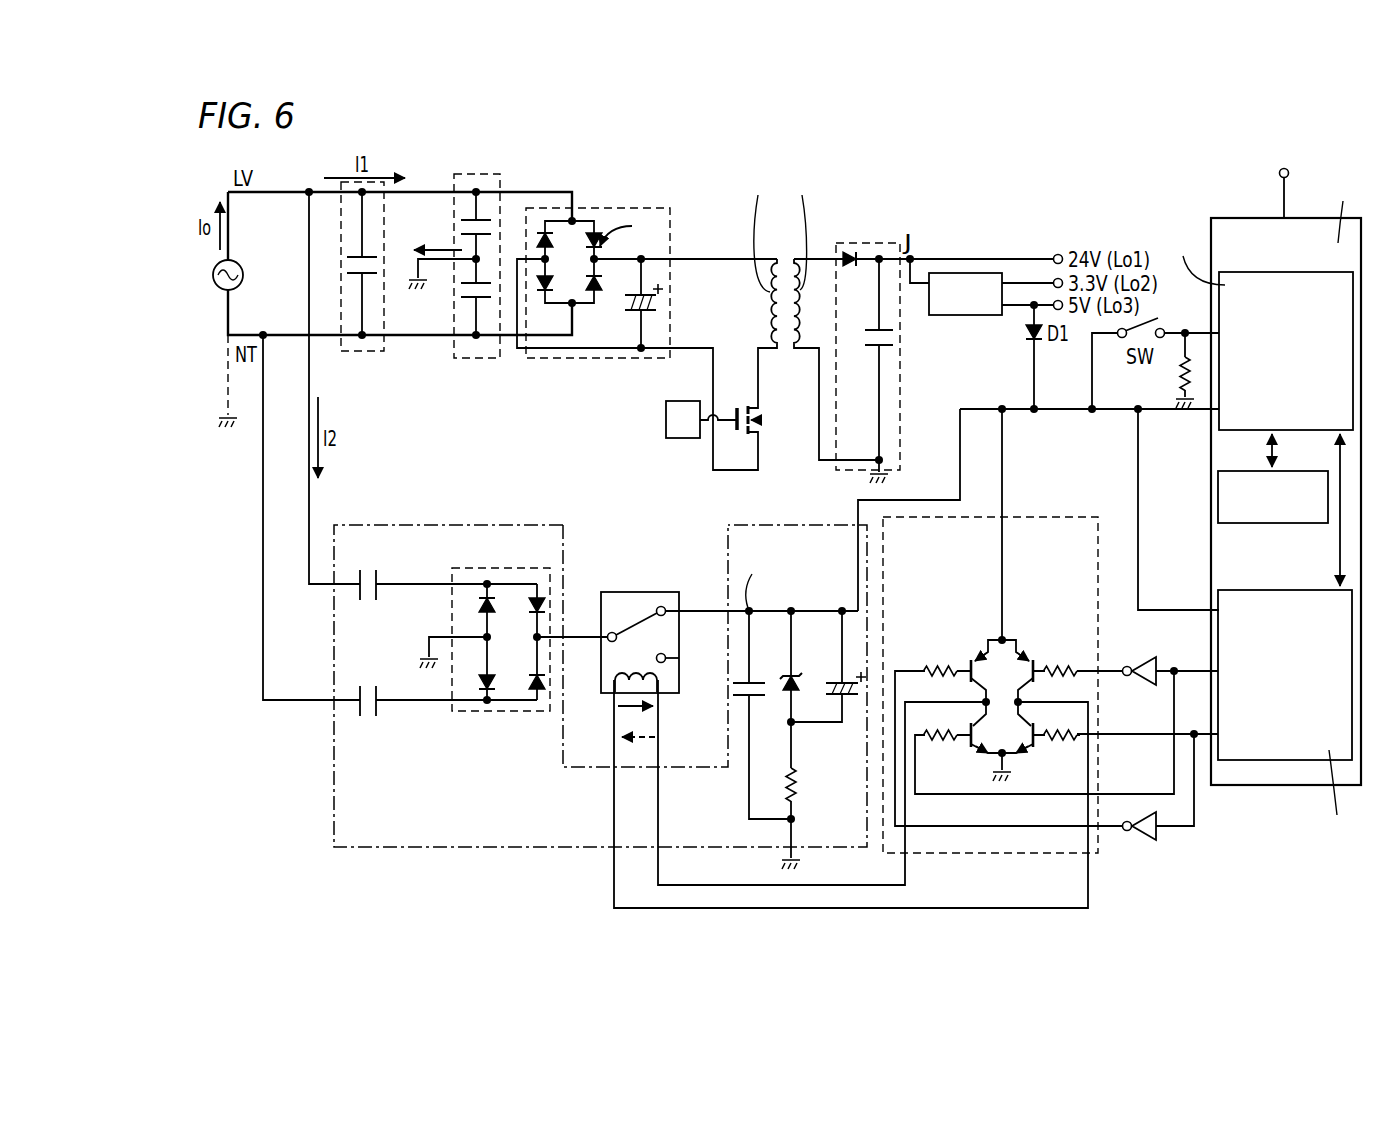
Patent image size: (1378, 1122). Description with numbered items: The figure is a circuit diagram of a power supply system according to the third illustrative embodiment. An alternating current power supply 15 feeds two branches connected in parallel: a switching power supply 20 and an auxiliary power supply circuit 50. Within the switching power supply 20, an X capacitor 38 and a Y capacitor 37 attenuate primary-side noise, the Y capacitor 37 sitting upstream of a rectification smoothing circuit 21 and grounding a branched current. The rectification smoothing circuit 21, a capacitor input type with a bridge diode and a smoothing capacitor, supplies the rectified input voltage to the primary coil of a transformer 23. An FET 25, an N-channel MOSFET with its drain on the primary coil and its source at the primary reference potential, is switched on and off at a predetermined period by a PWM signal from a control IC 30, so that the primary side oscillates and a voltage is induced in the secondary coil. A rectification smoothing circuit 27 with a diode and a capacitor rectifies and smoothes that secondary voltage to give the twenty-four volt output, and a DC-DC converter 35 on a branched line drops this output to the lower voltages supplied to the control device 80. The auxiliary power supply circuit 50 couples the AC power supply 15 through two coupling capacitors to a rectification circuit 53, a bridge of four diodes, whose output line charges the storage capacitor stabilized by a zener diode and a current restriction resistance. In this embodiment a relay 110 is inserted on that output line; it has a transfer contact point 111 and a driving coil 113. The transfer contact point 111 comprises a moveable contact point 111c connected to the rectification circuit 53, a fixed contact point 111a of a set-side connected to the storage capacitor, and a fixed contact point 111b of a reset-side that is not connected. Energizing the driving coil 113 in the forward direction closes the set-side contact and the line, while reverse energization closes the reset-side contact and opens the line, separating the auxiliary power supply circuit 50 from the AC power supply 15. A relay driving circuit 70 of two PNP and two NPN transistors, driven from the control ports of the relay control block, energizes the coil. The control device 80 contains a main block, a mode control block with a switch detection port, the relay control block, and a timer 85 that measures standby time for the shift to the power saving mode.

The alternating current power supply 15 is at (220, 289).
The switching power supply 20 is at (853, 308).
The rectification smoothing circuit 21 is at (615, 206).
The transformer 23 is at (815, 171).
The FET 25 is at (772, 448).
The rectification smoothing circuit 27 is at (868, 241).
The control IC 30 is at (681, 438).
The DC-DC converter 35 is at (963, 273).
The Y capacitor 37 is at (477, 176).
The X capacitor 38 is at (385, 218).
The auxiliary power supply circuit 50 is at (565, 556).
The rectification circuit 53 is at (527, 568).
The relay driving circuit 70 is at (1085, 515).
The control device 80 is at (1266, 514).
The timer 85 is at (1232, 523).
The relay 110 is at (710, 646).
The transfer contact point 111 is at (656, 604).
The fixed contact point of a set-side 111a is at (666, 609).
The fixed contact point of a reset-side 111b is at (669, 658).
The moveable contact point 111c is at (610, 633).
The driving coil 113 is at (662, 676).